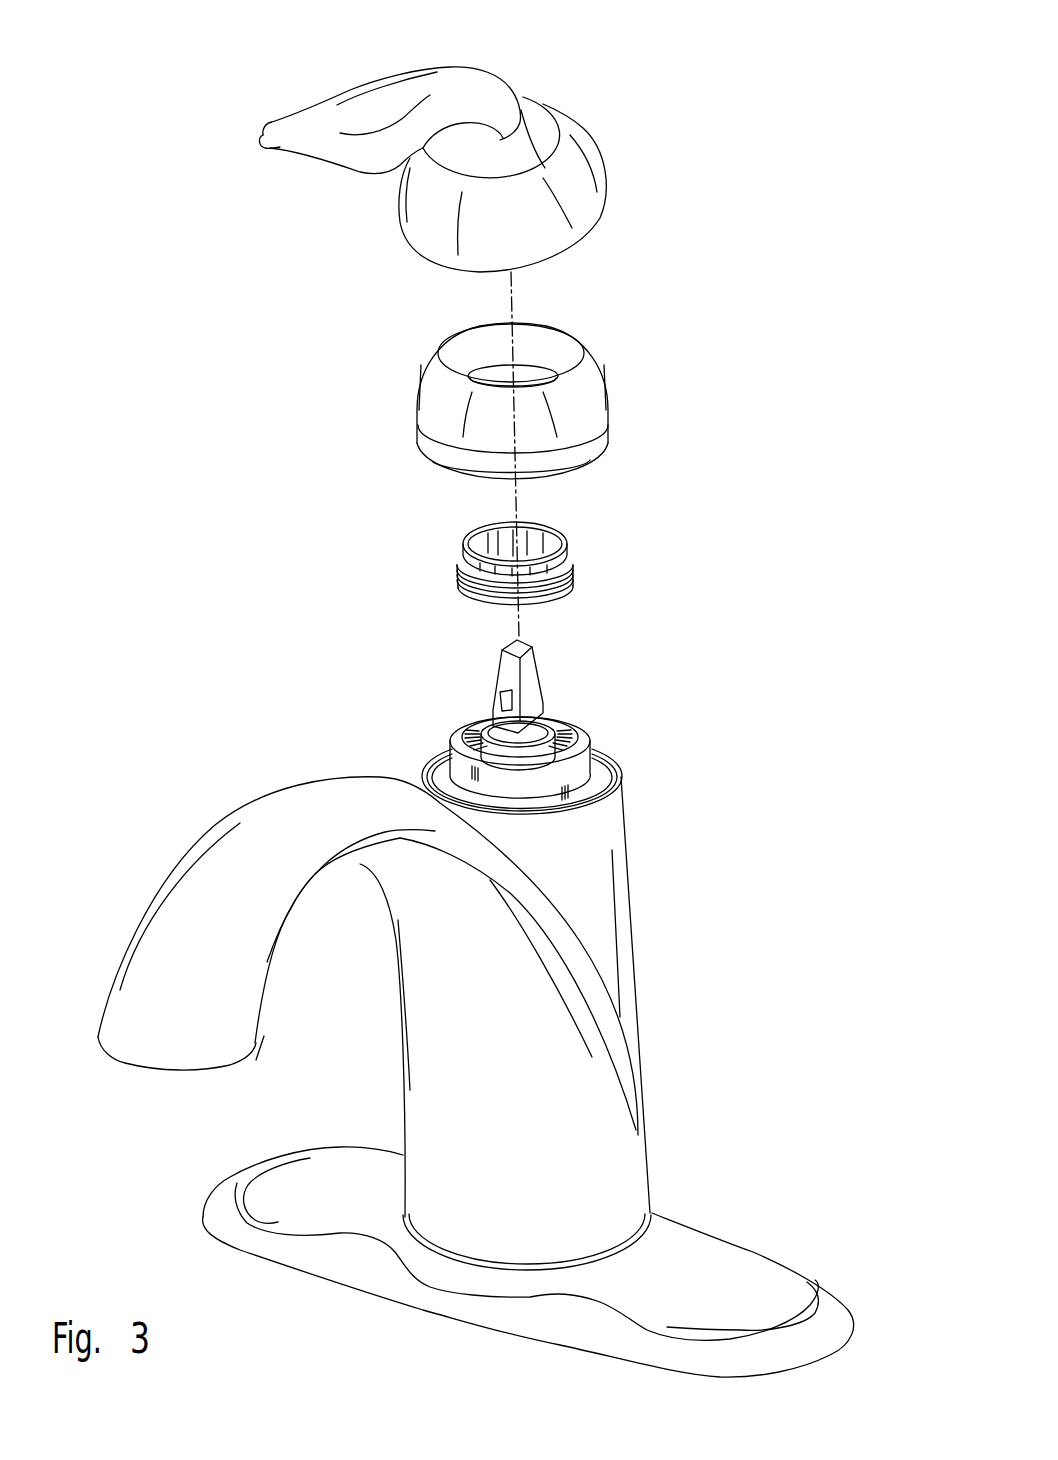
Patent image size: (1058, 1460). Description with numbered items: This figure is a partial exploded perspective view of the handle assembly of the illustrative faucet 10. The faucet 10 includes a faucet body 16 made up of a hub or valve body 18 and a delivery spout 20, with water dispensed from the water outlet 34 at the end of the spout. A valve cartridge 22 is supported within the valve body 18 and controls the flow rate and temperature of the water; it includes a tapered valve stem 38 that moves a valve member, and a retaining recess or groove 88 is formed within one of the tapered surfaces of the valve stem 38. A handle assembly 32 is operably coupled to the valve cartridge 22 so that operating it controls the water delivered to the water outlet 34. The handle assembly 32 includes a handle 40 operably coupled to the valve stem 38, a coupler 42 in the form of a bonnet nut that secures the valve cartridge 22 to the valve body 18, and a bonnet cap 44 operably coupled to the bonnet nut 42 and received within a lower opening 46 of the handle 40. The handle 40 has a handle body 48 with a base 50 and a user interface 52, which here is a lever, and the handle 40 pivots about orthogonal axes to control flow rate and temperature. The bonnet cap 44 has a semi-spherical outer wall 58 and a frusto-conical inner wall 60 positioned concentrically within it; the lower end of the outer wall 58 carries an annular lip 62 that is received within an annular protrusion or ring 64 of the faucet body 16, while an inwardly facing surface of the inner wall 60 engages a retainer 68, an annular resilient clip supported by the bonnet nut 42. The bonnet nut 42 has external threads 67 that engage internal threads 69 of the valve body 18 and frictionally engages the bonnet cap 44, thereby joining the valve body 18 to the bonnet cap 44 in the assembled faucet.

The faucet 10 is at (806, 135).
The faucet body 16 is at (680, 897).
The valve body 18 is at (632, 1028).
The delivery spout 20 is at (273, 810).
The valve cartridge 22 is at (447, 730).
The handle assembly 32 is at (615, 125).
The water outlet 34 is at (153, 1068).
The valve stem 38 is at (528, 660).
The handle 40 is at (538, 120).
The coupler 42 is at (570, 563).
The bonnet cap 44 is at (592, 377).
The lower opening 46 is at (575, 262).
The handle body 48 is at (422, 202).
The base 50 is at (590, 202).
The user interface 52 is at (320, 120).
The outer wall 58 is at (605, 433).
The inner wall 60 is at (468, 350).
The annular lip 62 is at (447, 470).
The annular protrusion or ring 64 is at (620, 763).
The external threads 67 is at (457, 575).
The retainer 68 is at (463, 550).
The internal threads 69 is at (573, 735).
The retaining groove 88 is at (498, 697).